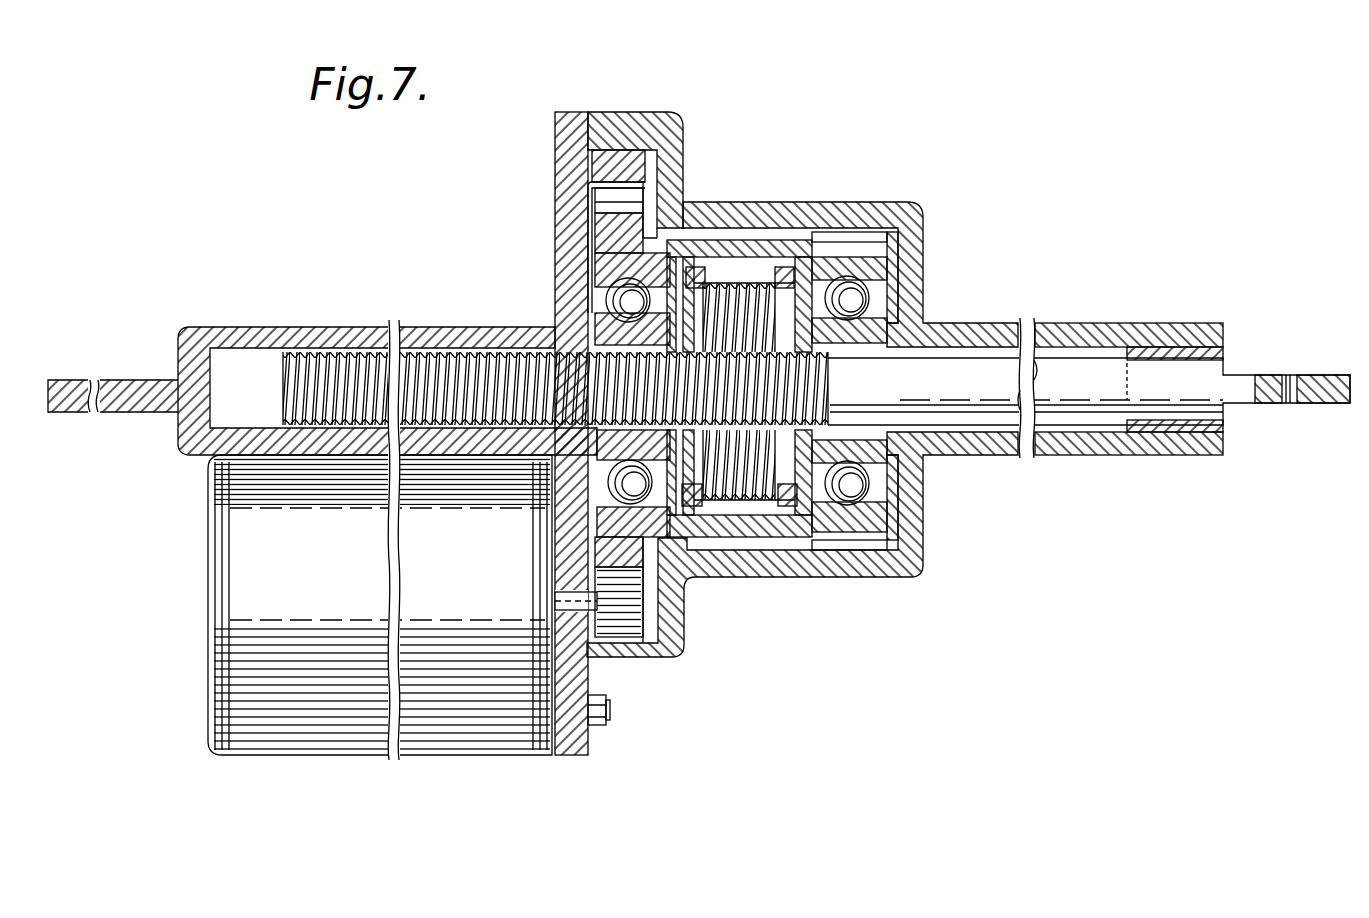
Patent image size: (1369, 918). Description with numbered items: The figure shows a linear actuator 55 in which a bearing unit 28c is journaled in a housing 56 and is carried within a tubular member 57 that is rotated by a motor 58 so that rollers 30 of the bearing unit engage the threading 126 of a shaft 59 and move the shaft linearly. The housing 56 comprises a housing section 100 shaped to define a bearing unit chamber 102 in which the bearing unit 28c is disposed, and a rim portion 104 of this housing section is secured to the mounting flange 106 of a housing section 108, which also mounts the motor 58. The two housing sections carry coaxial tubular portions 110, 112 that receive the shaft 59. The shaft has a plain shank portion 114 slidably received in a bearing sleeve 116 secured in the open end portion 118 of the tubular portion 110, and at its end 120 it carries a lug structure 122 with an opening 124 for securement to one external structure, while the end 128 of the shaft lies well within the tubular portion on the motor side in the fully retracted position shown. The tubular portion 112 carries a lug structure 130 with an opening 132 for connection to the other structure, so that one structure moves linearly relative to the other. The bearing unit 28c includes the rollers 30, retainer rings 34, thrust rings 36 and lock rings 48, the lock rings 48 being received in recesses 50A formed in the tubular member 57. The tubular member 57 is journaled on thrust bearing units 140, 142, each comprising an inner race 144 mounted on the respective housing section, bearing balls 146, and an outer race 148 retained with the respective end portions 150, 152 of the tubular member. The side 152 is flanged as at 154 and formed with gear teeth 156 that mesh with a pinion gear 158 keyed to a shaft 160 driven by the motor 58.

The lug structure 130 is at (128, 385).
The opening 132 is at (98, 412).
The threading 126 is at (483, 340).
The end of the shaft 128 is at (278, 375).
The tubular portion 112 is at (350, 345).
The motor 58 is at (480, 742).
The housing section 108 is at (553, 165).
The flange 154 is at (612, 552).
The shaft 160 is at (567, 755).
The gear teeth 156 is at (607, 205).
The outer race 148 is at (617, 263).
The thrust bearing unit 142 is at (595, 287).
The mounting flange 106 is at (563, 240).
The rim portion 104 is at (630, 125).
The recess 50A is at (690, 196).
The housing section 100 is at (907, 205).
The linear actuator 55 is at (985, 190).
The end portion of the tubular member 150 is at (913, 232).
The end portion of the tubular member 152 is at (607, 537).
The pinion gear 158 is at (627, 632).
The bearing unit 28c is at (792, 252).
The tubular member 57 is at (734, 250).
The retainer rings 34 is at (704, 280).
The housing 56 is at (706, 258).
The rollers 30 is at (754, 277).
The thrust rings 36 is at (800, 503).
The lock rings 48 is at (697, 513).
The thrust bearing unit 140 is at (870, 298).
The bearing unit chamber 102 is at (900, 272).
The bearing balls 146 is at (895, 295).
The inner race 144 is at (927, 324).
The tubular portion 110 is at (1117, 326).
The bearing sleeve 116 is at (1177, 350).
The open end portion 118 is at (1213, 323).
The shaft 59 is at (1062, 368).
The shank portion 114 is at (1150, 402).
The end of the shaft 120 is at (1250, 407).
The opening 124 is at (1303, 403).
The lug structure 122 is at (1343, 407).